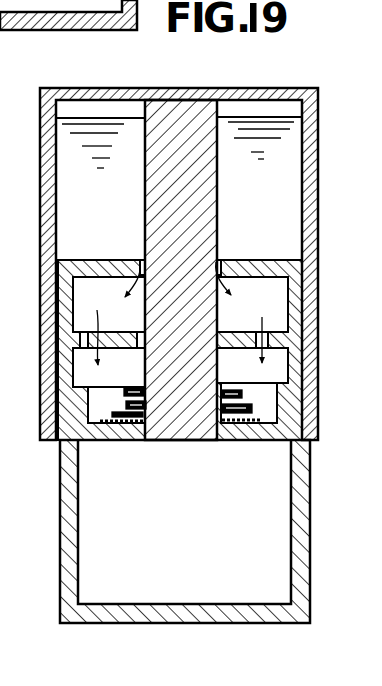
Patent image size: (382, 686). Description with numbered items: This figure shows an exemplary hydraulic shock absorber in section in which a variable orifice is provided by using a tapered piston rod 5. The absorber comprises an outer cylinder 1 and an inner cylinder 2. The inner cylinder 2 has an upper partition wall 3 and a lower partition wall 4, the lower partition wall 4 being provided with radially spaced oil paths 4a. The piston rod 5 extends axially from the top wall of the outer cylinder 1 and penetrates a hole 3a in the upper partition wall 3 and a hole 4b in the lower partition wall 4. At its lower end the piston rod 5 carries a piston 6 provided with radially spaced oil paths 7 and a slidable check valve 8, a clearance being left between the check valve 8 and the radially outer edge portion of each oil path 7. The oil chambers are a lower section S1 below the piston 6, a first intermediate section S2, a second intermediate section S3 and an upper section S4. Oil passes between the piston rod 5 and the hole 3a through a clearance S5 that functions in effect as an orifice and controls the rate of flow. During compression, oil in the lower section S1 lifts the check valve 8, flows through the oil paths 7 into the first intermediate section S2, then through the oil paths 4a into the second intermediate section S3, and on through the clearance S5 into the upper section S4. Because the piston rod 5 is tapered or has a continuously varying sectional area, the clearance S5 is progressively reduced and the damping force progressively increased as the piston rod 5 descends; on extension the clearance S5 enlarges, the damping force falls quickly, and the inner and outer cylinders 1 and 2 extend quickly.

The outer cylinder 1 is at (304, 124).
The inner cylinder 2 is at (163, 612).
The upper partition wall 3 is at (284, 257).
The hole 3a is at (218, 262).
The lower partition wall 4 is at (241, 330).
The oil paths 4a is at (240, 347).
The hole 4b is at (143, 418).
The piston rod 5 is at (184, 90).
The piston 6 is at (279, 412).
The oil paths 7 is at (97, 400).
The check valve 8 is at (135, 424).
The lower section S1 is at (6, 32).
The first intermediate section S2 is at (85, 363).
The second intermediate section S3 is at (80, 307).
The upper section S4 is at (268, 128).
The clearance S5 is at (140, 260).